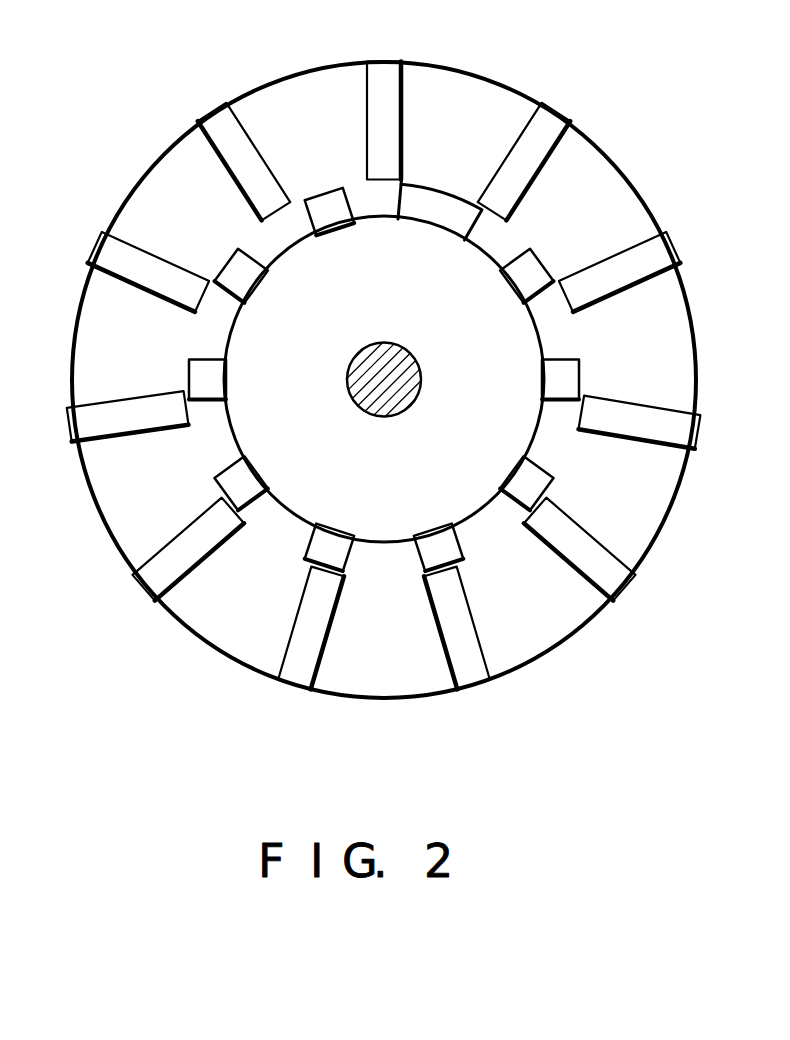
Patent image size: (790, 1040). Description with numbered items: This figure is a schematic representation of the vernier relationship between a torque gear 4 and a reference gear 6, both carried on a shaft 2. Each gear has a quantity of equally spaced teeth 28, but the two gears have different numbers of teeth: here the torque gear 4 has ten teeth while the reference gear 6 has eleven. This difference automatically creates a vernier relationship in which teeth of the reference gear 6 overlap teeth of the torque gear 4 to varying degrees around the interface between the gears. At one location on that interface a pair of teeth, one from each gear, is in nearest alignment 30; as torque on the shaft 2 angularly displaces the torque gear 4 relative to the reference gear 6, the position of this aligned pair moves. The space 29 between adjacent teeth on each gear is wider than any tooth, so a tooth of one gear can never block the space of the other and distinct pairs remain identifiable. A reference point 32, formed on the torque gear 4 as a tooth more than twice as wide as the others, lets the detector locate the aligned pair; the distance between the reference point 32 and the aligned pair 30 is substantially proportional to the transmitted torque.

The shaft 2 is at (398, 400).
The torque gear 4 is at (250, 445).
The reference gear 6 is at (97, 355).
The teeth 28 is at (660, 257).
The space between the teeth 29 is at (384, 387).
The pair of teeth in nearest alignment 30 is at (470, 560).
The reference point 32 is at (442, 203).